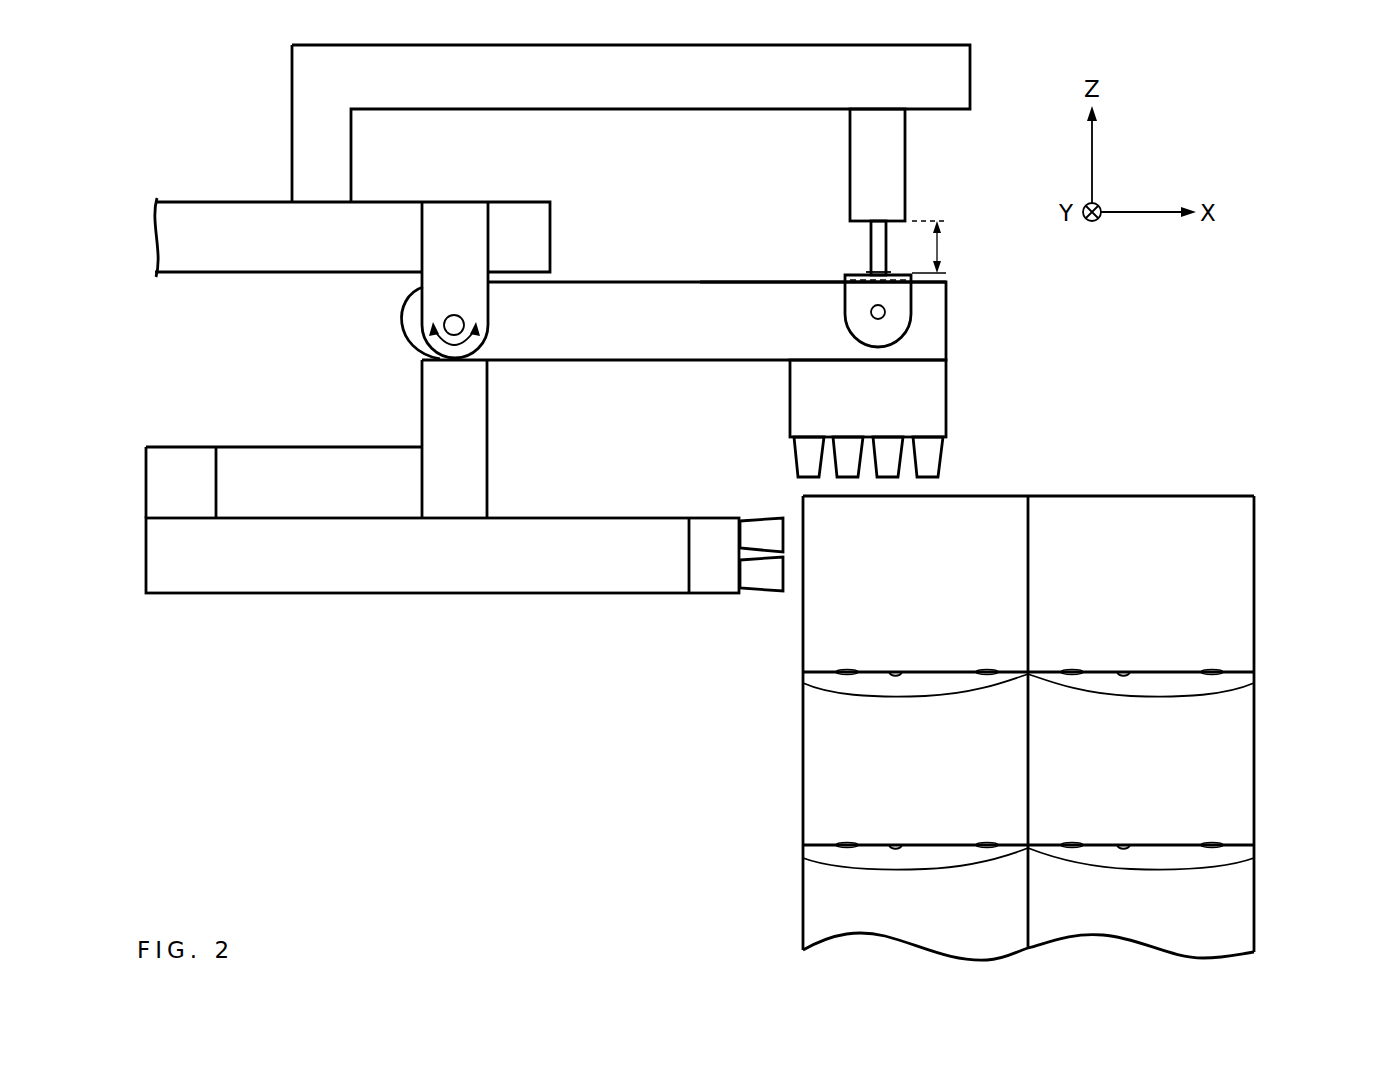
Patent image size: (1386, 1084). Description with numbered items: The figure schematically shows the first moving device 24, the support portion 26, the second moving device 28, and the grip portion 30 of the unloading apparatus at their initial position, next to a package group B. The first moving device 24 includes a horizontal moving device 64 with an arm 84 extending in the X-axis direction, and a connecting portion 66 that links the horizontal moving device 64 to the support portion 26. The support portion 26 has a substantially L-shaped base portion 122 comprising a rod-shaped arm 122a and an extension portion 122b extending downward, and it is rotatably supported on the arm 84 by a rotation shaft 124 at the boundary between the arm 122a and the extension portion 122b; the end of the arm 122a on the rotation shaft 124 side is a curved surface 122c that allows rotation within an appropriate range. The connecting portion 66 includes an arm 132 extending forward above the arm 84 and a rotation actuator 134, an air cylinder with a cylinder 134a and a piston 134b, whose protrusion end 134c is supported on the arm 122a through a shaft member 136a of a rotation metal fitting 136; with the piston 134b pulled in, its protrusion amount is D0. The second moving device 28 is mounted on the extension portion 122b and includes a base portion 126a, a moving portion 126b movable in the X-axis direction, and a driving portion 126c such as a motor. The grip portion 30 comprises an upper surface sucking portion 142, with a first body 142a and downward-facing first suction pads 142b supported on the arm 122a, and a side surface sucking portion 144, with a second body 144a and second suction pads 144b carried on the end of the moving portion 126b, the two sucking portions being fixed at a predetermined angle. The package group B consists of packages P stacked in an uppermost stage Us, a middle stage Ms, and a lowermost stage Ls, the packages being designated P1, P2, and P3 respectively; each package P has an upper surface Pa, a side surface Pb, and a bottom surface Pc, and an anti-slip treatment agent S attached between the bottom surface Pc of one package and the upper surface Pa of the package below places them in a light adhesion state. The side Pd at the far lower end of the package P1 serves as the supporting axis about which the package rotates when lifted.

The first moving device 24 is at (528, 450).
The support portion 26 is at (635, 360).
The second moving device 28 is at (465, 550).
The grip portion 30 is at (952, 412).
The horizontal moving device 64 is at (352, 193).
The connecting portion 66 is at (658, 196).
The arm 84 is at (258, 216).
The base portion 122 is at (635, 360).
The arm 122a is at (714, 280).
The extension portion 122b is at (478, 446).
The curved surface 122c is at (412, 352).
The rotation shaft 124 is at (445, 322).
The base portion 126a is at (316, 462).
The moving portion 126b is at (470, 580).
The driving portion 126c is at (184, 462).
The arm 132 is at (657, 98).
The rotation actuator 134 is at (807, 192).
The cylinder 134a is at (849, 166).
The piston 134b is at (871, 240).
The protrusion end 134c is at (870, 270).
The rotation metal fitting 136 is at (895, 311).
The shaft member 136a is at (886, 312).
The upper surface sucking portion 142 is at (916, 412).
The first body 142a is at (943, 400).
The first suction pads 142b is at (935, 450).
The side surface sucking portion 144 is at (717, 567).
The second body 144a is at (699, 535).
The second suction pads 144b is at (769, 535).
The protrusion amount D0 is at (944, 247).
The package group B is at (1043, 682).
The package P is at (1025, 500).
The package P1 is at (987, 510).
The package P2 is at (803, 722).
The package P3 is at (803, 886).
The upper surface Pa is at (925, 497).
The side surface Pb is at (802, 499).
The bottom surface Pc is at (900, 670).
The side Pd is at (1032, 668).
The anti-slip treatment agent S is at (803, 683).
The uppermost stage Us is at (1078, 521).
The middle stage Ms is at (1048, 746).
The lowermost stage Ls is at (1045, 902).